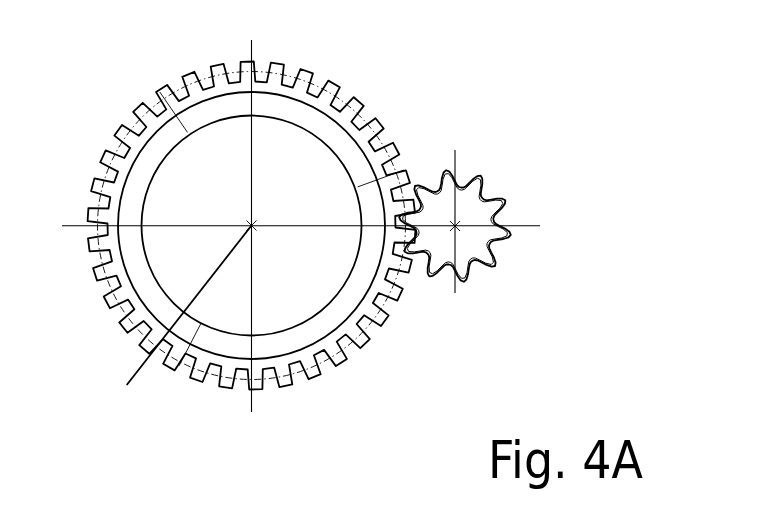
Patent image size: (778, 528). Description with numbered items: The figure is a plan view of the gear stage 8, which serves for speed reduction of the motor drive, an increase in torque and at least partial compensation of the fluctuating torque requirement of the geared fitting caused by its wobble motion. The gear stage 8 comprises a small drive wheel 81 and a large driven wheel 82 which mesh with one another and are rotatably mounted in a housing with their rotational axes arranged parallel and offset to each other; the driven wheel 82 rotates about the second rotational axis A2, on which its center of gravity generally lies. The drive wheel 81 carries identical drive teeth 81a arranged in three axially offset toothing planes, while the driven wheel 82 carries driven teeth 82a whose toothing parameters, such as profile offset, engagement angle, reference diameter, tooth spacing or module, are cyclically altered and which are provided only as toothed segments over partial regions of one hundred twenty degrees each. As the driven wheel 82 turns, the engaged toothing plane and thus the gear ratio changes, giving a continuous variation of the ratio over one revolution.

The gear stage 8 is at (311, 217).
The driven wheel 82 is at (301, 217).
The driven teeth 82a is at (375, 313).
The drive wheel 81 is at (480, 205).
The drive teeth 81a is at (470, 278).
The second rotational axis A2 is at (179, 326).